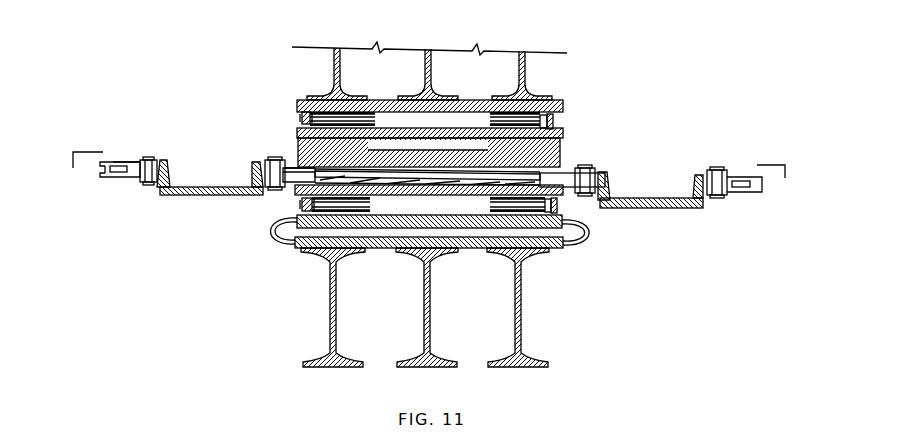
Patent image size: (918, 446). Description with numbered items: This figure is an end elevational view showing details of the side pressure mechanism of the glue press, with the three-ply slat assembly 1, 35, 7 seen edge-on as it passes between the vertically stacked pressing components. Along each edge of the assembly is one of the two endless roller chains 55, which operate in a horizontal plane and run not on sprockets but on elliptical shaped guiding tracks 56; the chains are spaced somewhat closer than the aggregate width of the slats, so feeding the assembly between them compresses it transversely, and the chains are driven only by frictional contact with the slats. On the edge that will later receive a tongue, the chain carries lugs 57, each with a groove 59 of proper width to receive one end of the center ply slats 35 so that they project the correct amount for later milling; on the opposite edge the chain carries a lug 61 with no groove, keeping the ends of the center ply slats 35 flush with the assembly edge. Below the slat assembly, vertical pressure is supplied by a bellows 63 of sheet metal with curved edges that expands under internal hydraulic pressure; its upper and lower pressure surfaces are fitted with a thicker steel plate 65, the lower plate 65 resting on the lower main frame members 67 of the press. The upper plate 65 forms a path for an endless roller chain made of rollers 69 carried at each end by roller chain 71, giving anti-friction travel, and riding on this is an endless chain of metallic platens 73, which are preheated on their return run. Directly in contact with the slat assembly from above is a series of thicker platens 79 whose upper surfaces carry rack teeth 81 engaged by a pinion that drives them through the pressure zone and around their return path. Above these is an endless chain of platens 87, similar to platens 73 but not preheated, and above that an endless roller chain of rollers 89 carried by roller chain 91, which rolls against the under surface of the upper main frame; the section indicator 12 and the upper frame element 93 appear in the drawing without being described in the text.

The outer ply slat 1 is at (556, 166).
The outer ply slat 7 is at (553, 207).
The section line indicator 12 is at (427, 176).
The center ply slats 35 is at (541, 183).
The endless roller chains 55 is at (153, 160).
The elliptical shaped guiding tracks 56 is at (168, 177).
The lugs 57 is at (113, 162).
The groove 59 is at (107, 173).
The lug 61 is at (568, 192).
The bellows 63 is at (592, 233).
The steel plate 65 is at (566, 228).
The lower main frame members 67 is at (520, 313).
The rollers 69 is at (398, 236).
The roller chain 71 is at (302, 205).
The platens 73 is at (293, 190).
The platens 79 is at (565, 145).
The rack teeth 81 is at (413, 147).
The platens 87 is at (305, 122).
The rollers 89 is at (457, 120).
The roller chain 91 is at (556, 122).
The top plate 93 is at (553, 103).